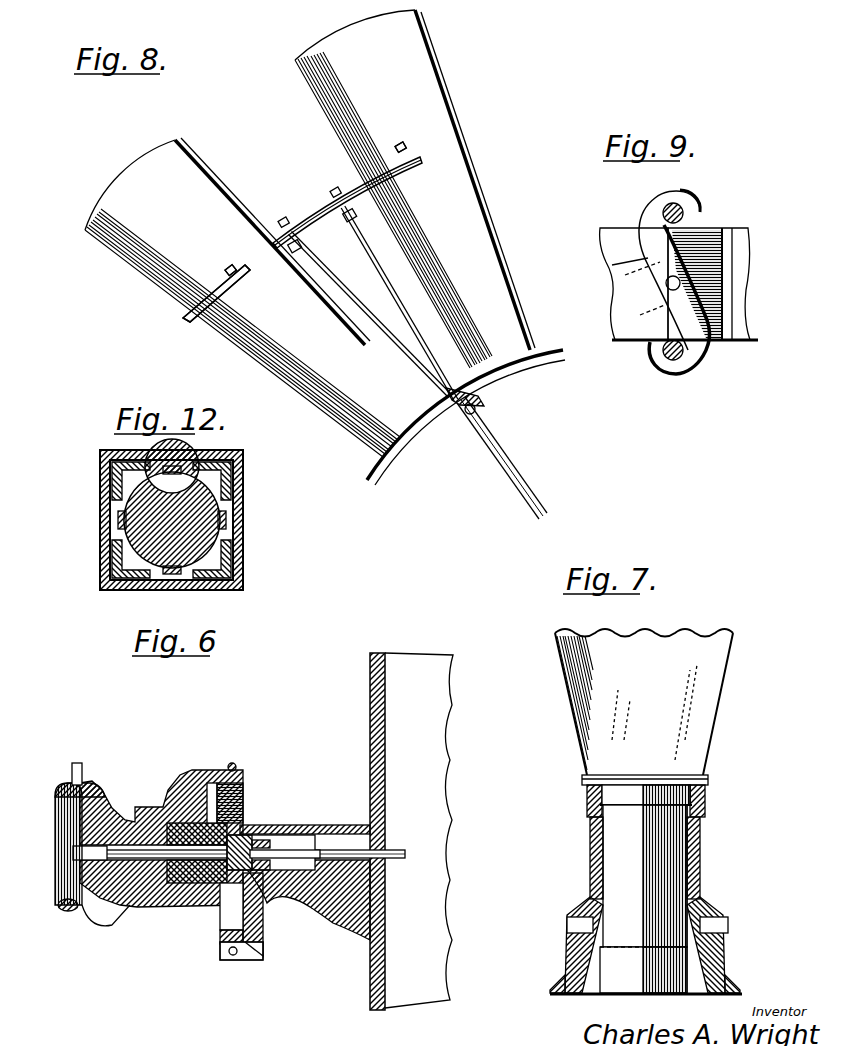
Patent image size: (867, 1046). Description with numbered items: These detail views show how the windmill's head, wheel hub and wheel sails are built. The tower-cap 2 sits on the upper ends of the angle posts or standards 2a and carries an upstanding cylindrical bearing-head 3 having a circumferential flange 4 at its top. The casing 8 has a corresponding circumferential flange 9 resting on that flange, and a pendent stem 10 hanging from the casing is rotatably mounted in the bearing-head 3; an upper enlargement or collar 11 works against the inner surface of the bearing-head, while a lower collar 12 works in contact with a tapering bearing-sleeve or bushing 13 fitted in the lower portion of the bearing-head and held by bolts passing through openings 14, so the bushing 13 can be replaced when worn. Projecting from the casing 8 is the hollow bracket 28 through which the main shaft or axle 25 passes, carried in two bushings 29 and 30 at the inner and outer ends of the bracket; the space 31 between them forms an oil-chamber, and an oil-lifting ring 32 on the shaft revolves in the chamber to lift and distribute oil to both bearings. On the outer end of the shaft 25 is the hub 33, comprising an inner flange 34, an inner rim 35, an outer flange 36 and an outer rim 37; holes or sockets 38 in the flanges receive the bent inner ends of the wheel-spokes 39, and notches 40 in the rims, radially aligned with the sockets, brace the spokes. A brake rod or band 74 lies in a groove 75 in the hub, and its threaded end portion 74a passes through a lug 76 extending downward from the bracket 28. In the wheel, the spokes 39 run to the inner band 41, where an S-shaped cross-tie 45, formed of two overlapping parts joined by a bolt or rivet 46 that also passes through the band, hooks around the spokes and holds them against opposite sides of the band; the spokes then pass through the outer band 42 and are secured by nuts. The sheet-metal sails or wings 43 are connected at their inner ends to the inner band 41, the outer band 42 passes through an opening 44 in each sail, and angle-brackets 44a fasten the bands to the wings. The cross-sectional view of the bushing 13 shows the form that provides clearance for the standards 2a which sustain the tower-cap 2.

In FIG. 7, the tower-cap 2 is at (722, 955).
In FIG. 12, the angle posts or standards 2a is at (243, 468).
In FIG. 7, the bearing-head 3 is at (705, 850).
In FIG. 7, the circumferential flange 4 is at (588, 788).
In FIG. 6, the casing 8 is at (371, 699).
In FIG. 7, the casing 8 is at (644, 702).
In FIG. 7, the circumferential flange 9 is at (708, 779).
In FIG. 7, the pendent stem 10 is at (617, 851).
In FIG. 7, the enlargement or collar 11 is at (622, 797).
In FIG. 7, the enlargement or collar 12 is at (645, 975).
In FIG. 12, the bearing-sleeve or bushing 13 is at (222, 536).
In FIG. 7, the bearing-sleeve or bushing 13 is at (705, 975).
In FIG. 7, the openings 14 is at (568, 926).
In FIG. 6, the main shaft or axle 25 is at (306, 858).
In FIG. 6, the bracket 28 is at (343, 826).
In FIG. 6, the bushing 29 is at (386, 866).
In FIG. 6, the bushing 30 is at (176, 843).
In FIG. 6, the space or oil-chamber 31 is at (284, 843).
In FIG. 6, the oil-lifting ring 32 is at (262, 872).
In FIG. 6, the hub 33 is at (121, 888).
In FIG. 6, the inner flange 34 is at (222, 905).
In FIG. 6, the inner rim 35 is at (264, 949).
In FIG. 6, the outer flange 36 is at (98, 915).
In FIG. 6, the outer rim 37 is at (62, 910).
In FIG. 6, the holes or sockets 38 is at (105, 806).
In FIG. 8, the wheel-spokes 39 is at (533, 500).
In FIG. 9, the wheel-spokes 39 is at (662, 210).
In FIG. 6, the wheel-spokes 39 is at (82, 772).
In FIG. 6, the notches 40 is at (78, 815).
In FIG. 8, the inner band 41 is at (418, 437).
In FIG. 9, the inner band 41 is at (710, 262).
In FIG. 8, the outer band 42 is at (218, 333).
In FIG. 8, the sails or wings 43 is at (310, 233).
In FIG. 8, the opening 44 is at (417, 160).
In FIG. 8, the angle-brackets 44a is at (410, 150).
In FIG. 8, the S-shaped cross-tie 45 is at (487, 404).
In FIG. 9, the S-shaped cross-tie 45 is at (648, 245).
In FIG. 9, the bolt or rivet 46 is at (665, 286).
In FIG. 6, the brake rod or band 74 is at (220, 950).
In FIG. 6, the threaded end portion 74a is at (234, 957).
In FIG. 6, the groove 75 is at (240, 776).
In FIG. 6, the lug 76 is at (260, 961).